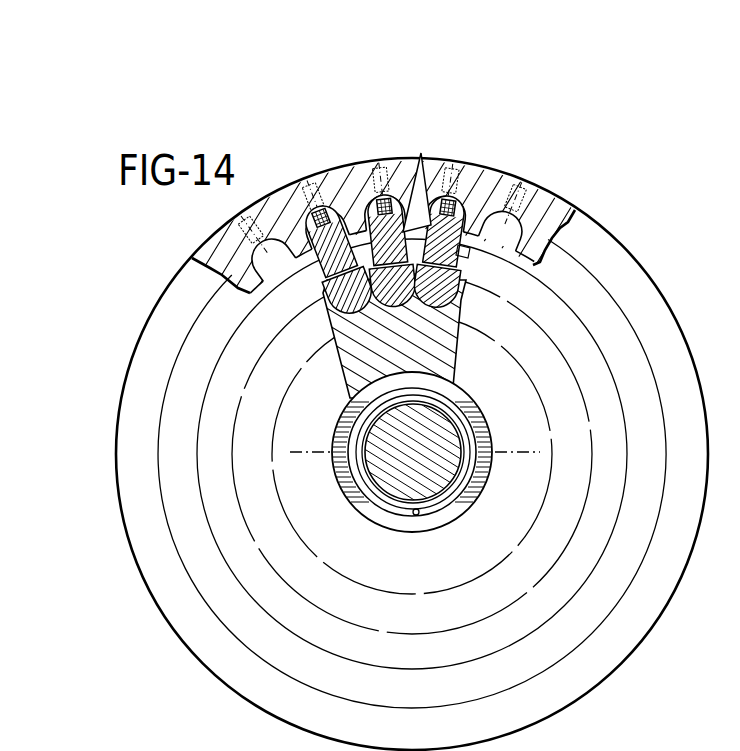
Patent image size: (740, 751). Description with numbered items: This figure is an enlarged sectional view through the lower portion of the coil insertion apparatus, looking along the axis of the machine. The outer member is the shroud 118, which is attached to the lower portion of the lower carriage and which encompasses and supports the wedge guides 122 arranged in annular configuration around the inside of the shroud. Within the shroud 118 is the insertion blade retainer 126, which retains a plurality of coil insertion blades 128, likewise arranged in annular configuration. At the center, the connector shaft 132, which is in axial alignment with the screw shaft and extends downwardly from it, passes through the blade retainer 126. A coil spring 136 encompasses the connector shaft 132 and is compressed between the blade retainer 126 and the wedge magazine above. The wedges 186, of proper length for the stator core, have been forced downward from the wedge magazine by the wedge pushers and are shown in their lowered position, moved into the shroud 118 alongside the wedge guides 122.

The shroud 118 is at (211, 241).
The wedge guides 122 is at (421, 168).
The insertion blade retainer 126 is at (457, 358).
The coil insertion blades 128 is at (342, 316).
The connector shaft 132 is at (375, 432).
The coil spring 136 is at (360, 480).
The wedges 186 is at (460, 254).